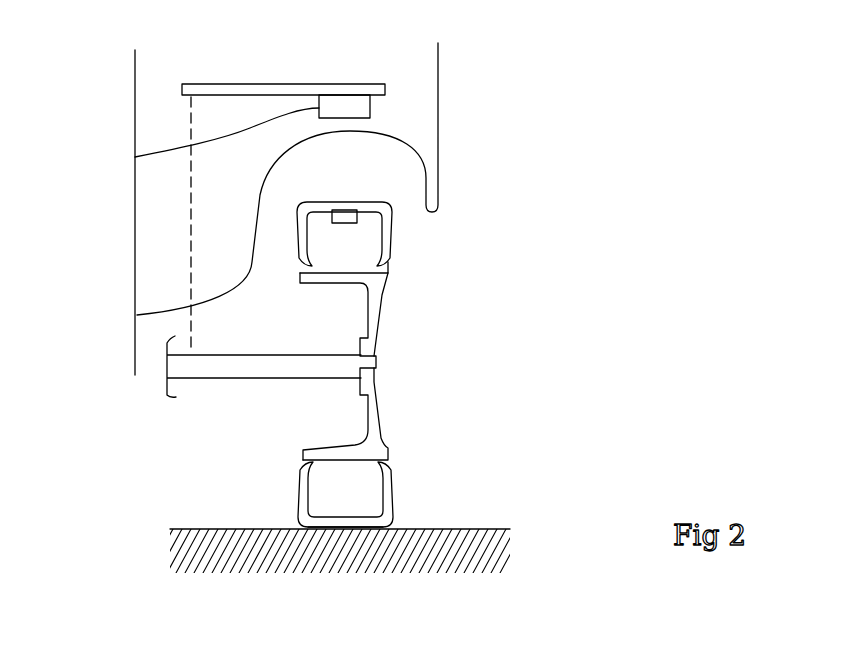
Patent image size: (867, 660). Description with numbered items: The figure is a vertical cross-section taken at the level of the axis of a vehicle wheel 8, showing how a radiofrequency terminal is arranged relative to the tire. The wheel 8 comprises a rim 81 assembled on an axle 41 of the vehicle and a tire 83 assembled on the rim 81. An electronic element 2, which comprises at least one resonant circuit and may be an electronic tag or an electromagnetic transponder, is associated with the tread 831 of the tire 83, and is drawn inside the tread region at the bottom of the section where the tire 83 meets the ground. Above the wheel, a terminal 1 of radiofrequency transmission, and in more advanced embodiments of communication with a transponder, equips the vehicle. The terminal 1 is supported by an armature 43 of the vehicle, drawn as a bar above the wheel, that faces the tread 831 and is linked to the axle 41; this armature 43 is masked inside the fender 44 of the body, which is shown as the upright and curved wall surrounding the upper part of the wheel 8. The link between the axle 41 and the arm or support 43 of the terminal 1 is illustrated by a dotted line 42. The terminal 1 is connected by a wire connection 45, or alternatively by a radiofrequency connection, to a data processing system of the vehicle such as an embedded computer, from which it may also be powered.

The terminal 1 is at (354, 105).
The electronic element 2 is at (344, 216).
The wheel 8 is at (480, 368).
The axle 41 is at (180, 368).
The dotted line 42 is at (191, 215).
The armature 43 is at (215, 84).
The fender 44 is at (438, 74).
The wire connection 45 is at (148, 152).
The rim 81 is at (376, 302).
The tire 83 is at (391, 497).
The tread 831 is at (340, 522).